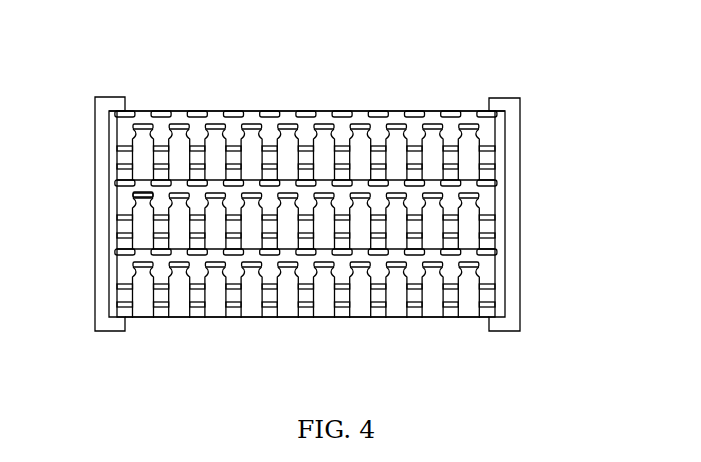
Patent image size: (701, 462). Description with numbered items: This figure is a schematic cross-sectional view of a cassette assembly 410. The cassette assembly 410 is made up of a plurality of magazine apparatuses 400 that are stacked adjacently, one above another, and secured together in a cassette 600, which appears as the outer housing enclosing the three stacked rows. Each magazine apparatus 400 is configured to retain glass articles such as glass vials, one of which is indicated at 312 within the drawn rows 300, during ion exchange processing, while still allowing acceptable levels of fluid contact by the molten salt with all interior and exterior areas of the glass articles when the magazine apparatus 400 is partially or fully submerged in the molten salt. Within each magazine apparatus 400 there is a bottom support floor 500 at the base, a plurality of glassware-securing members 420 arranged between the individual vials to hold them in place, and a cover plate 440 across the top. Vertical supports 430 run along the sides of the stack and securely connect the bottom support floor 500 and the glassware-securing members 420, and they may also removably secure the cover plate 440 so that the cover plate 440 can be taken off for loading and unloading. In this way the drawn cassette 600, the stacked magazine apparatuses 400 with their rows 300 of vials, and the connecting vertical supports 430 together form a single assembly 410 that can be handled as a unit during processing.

The cassette assembly 410 is at (372, 70).
The housing 600 is at (93, 309).
The vertical supports 430 is at (507, 125).
The row of containers 300 is at (497, 194).
The cover plate 440 is at (487, 110).
The glassware-securing members 420 is at (127, 211).
The magazine apparatus 400 is at (544, 149).
The container cap 312 is at (133, 207).
The bottom support floor 500 is at (128, 319).